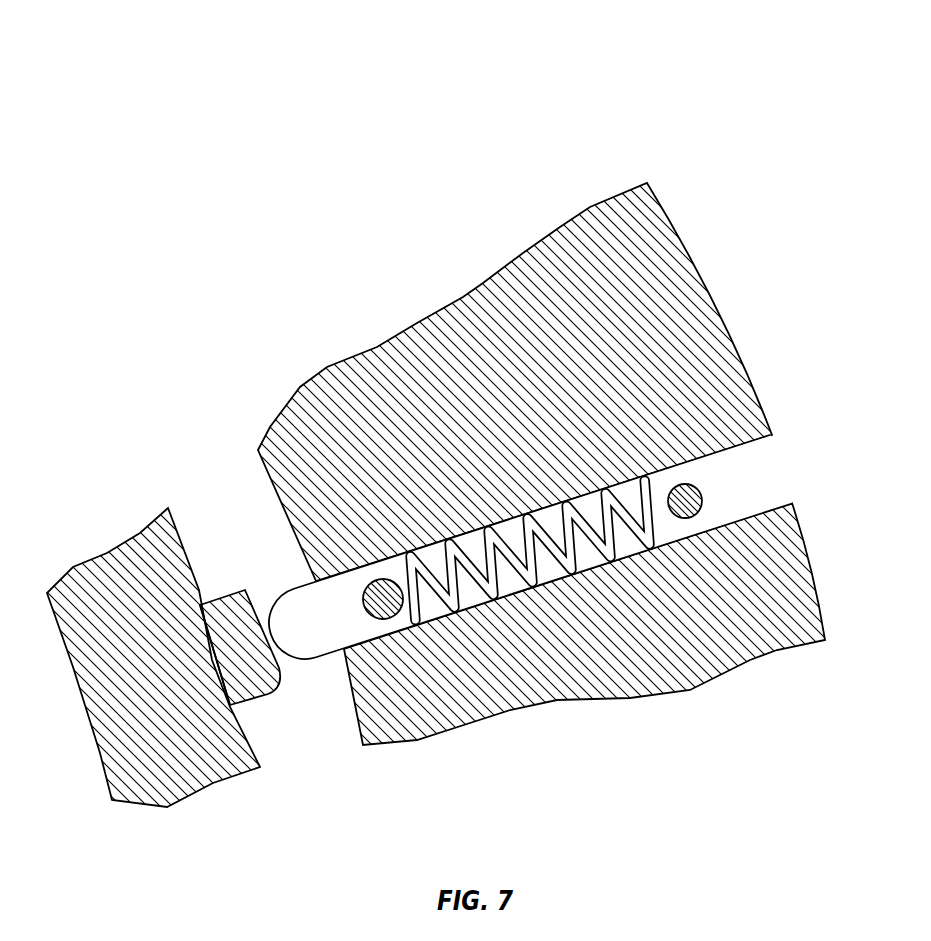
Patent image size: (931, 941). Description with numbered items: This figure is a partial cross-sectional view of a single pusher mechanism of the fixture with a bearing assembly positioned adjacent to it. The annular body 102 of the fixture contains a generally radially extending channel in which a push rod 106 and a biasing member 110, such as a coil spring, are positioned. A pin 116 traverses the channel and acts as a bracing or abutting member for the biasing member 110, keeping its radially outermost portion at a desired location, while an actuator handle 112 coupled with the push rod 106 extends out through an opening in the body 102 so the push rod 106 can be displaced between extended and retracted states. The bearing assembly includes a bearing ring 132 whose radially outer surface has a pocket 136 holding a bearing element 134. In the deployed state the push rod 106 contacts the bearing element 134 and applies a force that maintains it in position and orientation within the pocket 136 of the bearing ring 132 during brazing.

The body 102 is at (672, 227).
The push rod 106 is at (320, 661).
The biasing member 110 is at (433, 567).
The actuator handle 112 is at (380, 619).
The pin 116 is at (684, 485).
The bearing ring 132 is at (111, 797).
The bearing element 134 is at (233, 588).
The pocket 136 is at (217, 665).